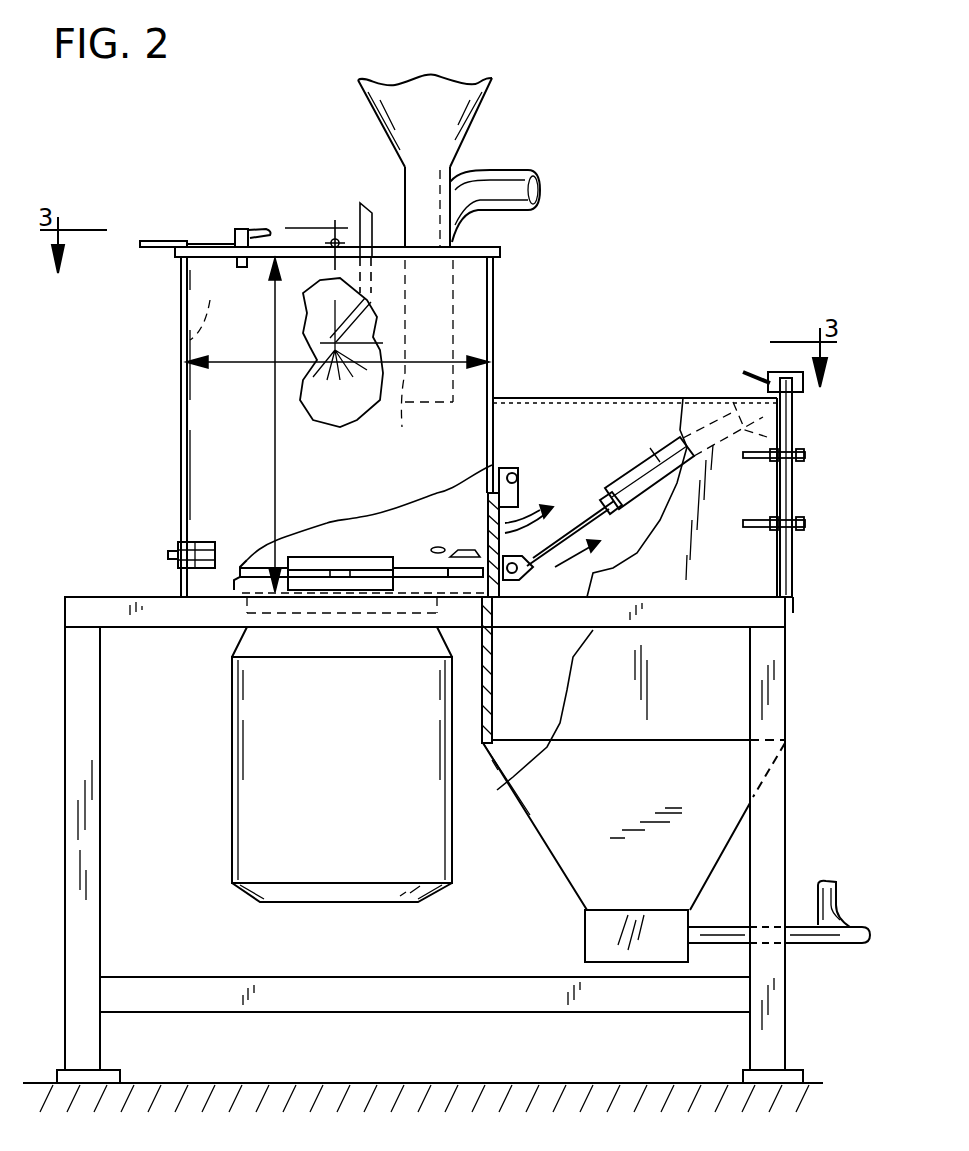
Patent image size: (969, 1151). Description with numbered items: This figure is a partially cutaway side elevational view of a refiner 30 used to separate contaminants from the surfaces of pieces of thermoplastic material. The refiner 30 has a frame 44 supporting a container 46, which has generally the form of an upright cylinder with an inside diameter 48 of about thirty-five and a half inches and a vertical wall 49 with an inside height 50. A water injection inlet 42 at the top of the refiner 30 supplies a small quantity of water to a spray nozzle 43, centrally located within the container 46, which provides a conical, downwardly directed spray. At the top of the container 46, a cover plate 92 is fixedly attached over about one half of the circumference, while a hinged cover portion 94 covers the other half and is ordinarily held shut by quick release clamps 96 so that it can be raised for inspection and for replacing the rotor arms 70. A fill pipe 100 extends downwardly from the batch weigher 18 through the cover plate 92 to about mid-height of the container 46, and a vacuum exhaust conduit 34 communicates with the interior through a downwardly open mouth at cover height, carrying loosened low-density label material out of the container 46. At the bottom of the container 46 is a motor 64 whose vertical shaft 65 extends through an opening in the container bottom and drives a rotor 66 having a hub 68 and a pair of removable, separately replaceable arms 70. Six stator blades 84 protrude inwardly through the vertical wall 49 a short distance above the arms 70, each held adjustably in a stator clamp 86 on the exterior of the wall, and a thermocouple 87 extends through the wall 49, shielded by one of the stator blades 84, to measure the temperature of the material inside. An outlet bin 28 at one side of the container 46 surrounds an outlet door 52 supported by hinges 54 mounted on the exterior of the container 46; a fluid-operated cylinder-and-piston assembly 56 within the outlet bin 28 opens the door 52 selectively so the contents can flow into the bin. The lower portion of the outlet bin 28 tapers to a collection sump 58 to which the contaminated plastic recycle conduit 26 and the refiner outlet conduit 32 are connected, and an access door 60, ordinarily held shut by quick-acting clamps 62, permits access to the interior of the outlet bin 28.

The batch weigher 18 is at (378, 118).
The contaminated plastic recycle conduit 26 is at (838, 900).
The outlet bin 28 is at (603, 398).
The refiner 30 is at (517, 317).
The refiner outlet conduit 32 is at (858, 945).
The vacuum exhaust conduit 34 is at (510, 168).
The water injection inlet 42 is at (358, 222).
The spray nozzle 43 is at (357, 355).
The frame 44 is at (97, 942).
The container 46 is at (183, 432).
The inside diameter 48 is at (242, 360).
The vertical wall 49 is at (286, 348).
The inside height 50 is at (276, 452).
The outlet door 52 is at (523, 512).
The hinges 54 is at (503, 477).
The fluid-operated cylinder-and-piston assembly 56 is at (627, 477).
The collection sump 58 is at (603, 933).
The access door 60 is at (792, 500).
The quick-acting clamps 62 is at (795, 452).
The motor 64 is at (232, 772).
The vertical shaft 65 is at (343, 592).
The rotor 66 is at (365, 550).
The hub 68 is at (352, 580).
The rotor arms 70 is at (420, 568).
The stator blades 84 is at (467, 547).
The stator clamp 86 is at (185, 540).
The thermocouple 87 is at (440, 547).
The cover plate 92 is at (373, 243).
The hinged cover portion 94 is at (215, 246).
The quick release clamps 96 is at (247, 227).
The fill pipe 100 is at (407, 177).